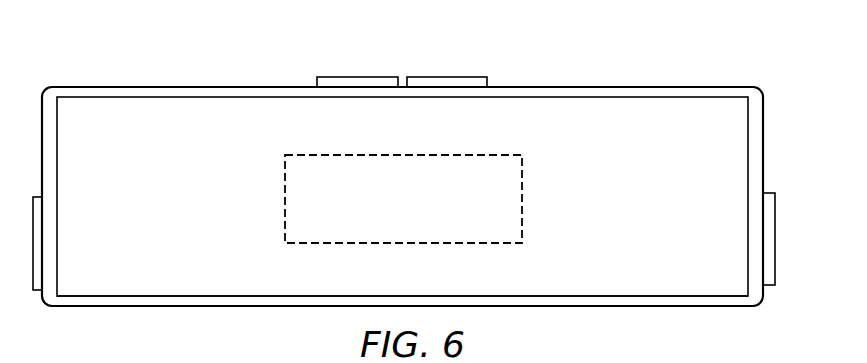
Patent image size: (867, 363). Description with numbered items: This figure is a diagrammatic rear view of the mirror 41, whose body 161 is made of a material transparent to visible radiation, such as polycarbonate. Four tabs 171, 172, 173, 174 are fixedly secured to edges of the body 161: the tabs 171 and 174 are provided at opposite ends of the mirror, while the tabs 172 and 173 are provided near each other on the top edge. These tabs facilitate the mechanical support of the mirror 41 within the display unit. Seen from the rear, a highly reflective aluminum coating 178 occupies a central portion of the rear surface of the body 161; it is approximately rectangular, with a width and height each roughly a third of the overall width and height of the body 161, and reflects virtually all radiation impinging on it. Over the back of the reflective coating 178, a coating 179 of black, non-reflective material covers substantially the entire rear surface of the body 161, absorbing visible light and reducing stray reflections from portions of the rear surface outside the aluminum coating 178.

The mirror 41 is at (698, 84).
The coating of non-reflective material 179 is at (167, 110).
The tab 173 is at (357, 81).
The tab 172 is at (446, 81).
The tab 174 is at (40, 290).
The tab 171 is at (769, 287).
The highly reflective aluminum coating 178 is at (523, 199).
The body 161 is at (652, 300).